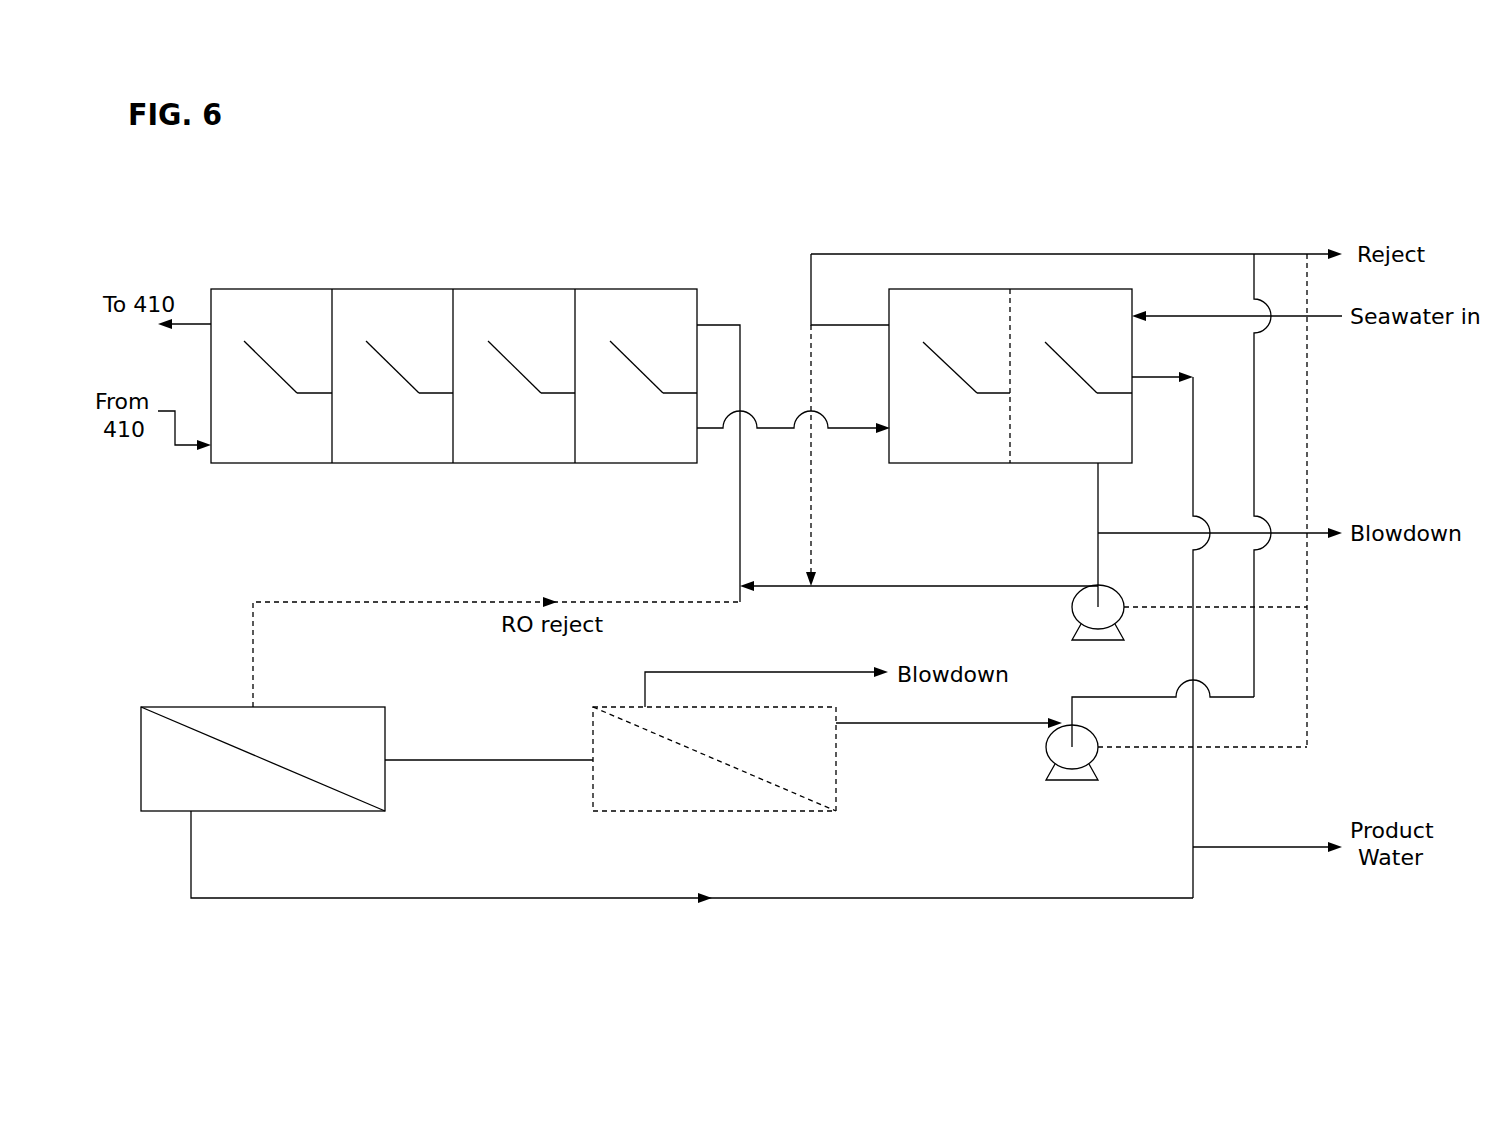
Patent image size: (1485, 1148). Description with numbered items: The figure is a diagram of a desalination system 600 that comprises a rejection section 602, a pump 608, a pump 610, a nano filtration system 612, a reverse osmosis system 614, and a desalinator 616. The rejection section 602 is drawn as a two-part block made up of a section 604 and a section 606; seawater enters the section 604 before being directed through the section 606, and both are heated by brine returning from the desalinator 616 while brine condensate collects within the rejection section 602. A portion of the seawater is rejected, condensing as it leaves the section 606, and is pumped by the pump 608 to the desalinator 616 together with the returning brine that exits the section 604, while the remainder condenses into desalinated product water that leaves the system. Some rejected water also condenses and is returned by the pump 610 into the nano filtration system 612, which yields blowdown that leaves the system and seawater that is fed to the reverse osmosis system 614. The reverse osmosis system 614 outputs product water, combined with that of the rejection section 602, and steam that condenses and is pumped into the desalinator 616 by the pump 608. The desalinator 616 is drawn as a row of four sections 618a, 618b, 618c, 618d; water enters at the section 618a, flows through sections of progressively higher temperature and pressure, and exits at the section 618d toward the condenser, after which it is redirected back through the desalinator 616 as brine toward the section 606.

The desalination system 600 is at (1362, 157).
The rejection section 602 is at (1010, 375).
The section 604 is at (1098, 289).
The section 606 is at (977, 289).
The pump 608 is at (1072, 607).
The pump 610 is at (1046, 750).
The nano filtration system 612 is at (836, 785).
The reverse osmosis system 614 is at (385, 792).
The desalinator 616 is at (453, 386).
The section 618a is at (596, 289).
The section 618b is at (474, 289).
The section 618c is at (352, 289).
The section 618d is at (229, 289).